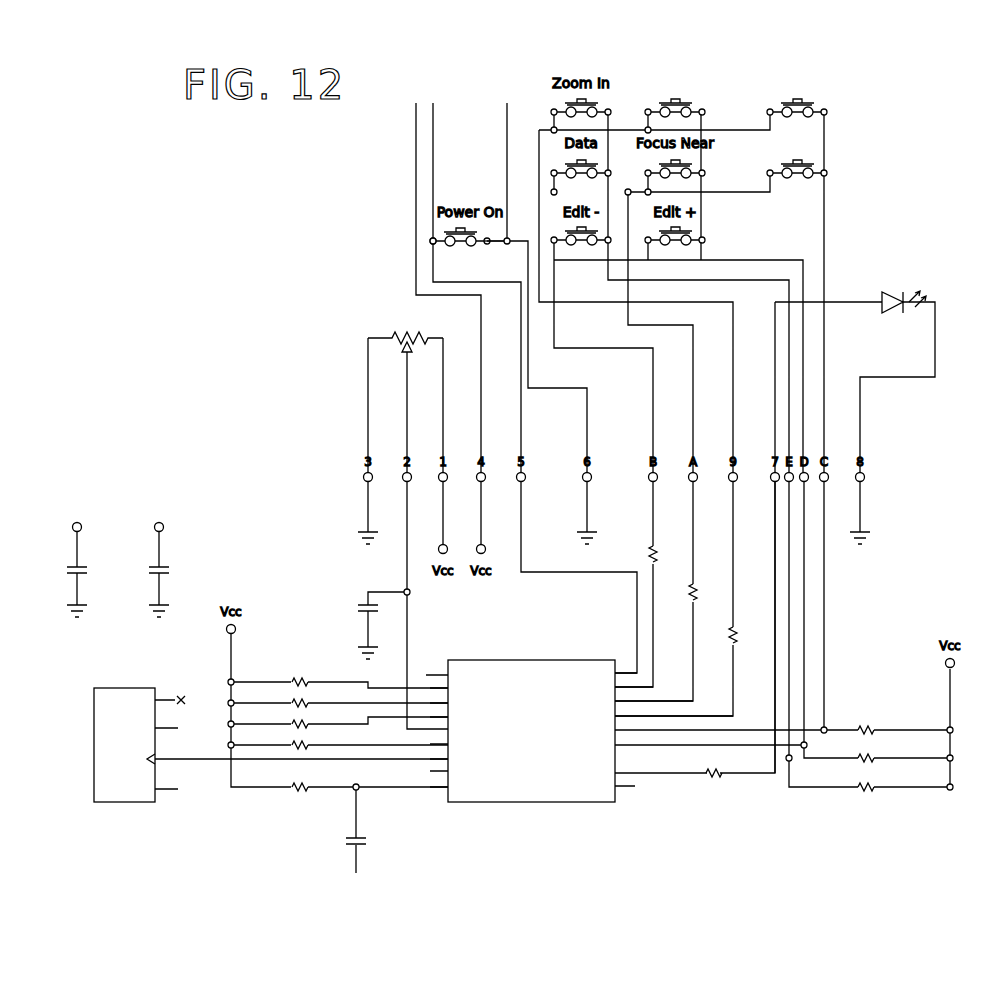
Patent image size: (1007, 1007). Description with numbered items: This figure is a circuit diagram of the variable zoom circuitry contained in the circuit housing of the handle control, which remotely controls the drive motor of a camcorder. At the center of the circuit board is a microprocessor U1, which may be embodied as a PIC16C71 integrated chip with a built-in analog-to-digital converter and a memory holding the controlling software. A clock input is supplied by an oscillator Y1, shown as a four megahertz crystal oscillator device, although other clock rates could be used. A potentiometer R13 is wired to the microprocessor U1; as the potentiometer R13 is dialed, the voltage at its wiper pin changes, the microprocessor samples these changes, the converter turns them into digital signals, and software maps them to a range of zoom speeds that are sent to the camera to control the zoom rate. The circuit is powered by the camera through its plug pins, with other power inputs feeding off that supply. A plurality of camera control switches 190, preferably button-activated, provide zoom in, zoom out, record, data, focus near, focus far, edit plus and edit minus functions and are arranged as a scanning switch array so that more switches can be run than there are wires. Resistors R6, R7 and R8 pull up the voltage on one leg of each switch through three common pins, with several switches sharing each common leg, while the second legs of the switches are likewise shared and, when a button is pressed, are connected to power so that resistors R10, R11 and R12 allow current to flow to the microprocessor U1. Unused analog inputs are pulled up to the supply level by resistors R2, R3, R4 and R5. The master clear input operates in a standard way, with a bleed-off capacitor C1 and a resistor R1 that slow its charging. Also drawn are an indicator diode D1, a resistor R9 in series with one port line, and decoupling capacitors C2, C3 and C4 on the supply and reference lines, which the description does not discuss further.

The camera control switches 190 is at (690, 106).
The microprocessor U1 is at (487, 658).
The light emitting diode D1 is at (904, 295).
The oscillator Y1 is at (127, 687).
The potentiometer R13 is at (409, 398).
The bleed-off capacitor C1 is at (333, 828).
The 0.01uf capacitor C2 is at (97, 561).
The 0.01uf capacitor C3 is at (346, 613).
The 0.01uf capacitor C4 is at (179, 561).
The resistor R1 is at (303, 781).
The resistor R2 is at (303, 676).
The resistor R3 is at (303, 697).
The resistor R4 is at (303, 718).
The resistor R5 is at (303, 739).
The resistor R6 is at (871, 724).
The resistor R7 is at (871, 753).
The resistor R8 is at (871, 781).
The 220 ohm resistor R9 is at (715, 779).
The resistor R10 is at (746, 636).
The resistor R11 is at (706, 592).
The resistor R12 is at (666, 550).